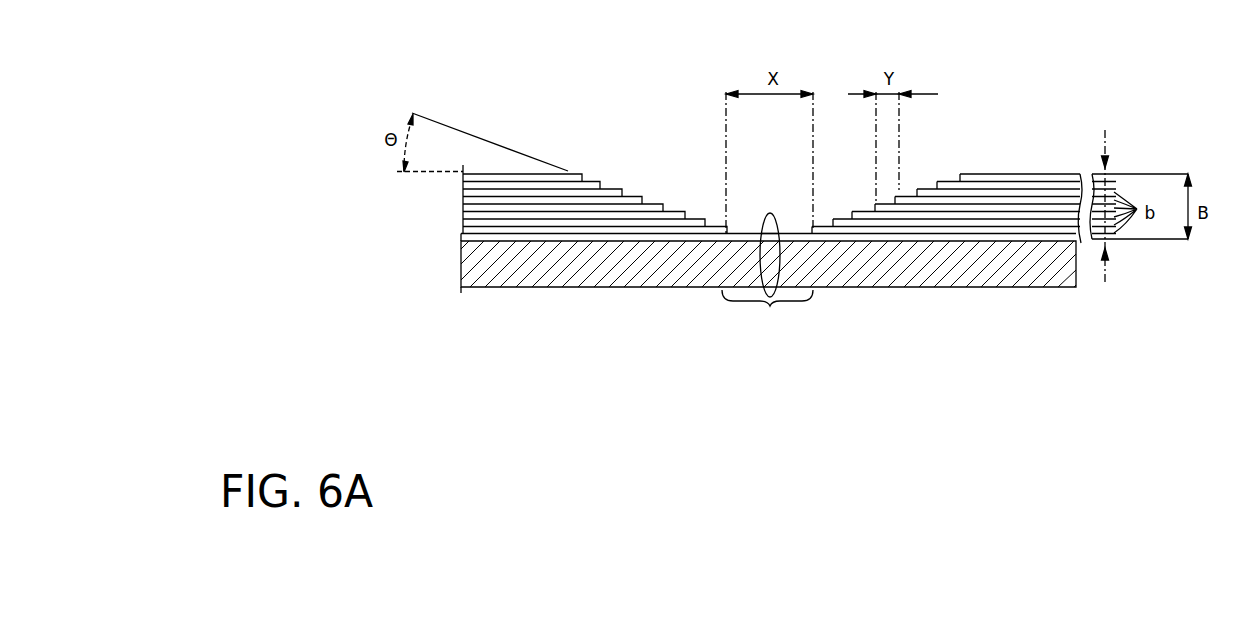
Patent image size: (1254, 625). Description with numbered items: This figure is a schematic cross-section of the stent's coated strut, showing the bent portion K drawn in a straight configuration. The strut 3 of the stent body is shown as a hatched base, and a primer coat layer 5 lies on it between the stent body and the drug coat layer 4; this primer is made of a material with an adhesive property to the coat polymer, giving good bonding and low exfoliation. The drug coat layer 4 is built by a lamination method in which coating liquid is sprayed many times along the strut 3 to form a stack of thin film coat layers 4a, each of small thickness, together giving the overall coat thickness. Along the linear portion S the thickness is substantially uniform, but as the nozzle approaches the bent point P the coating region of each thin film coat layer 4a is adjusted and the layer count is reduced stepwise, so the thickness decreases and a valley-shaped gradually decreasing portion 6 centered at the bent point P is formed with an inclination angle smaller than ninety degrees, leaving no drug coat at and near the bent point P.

The strut 3 is at (953, 284).
The drug coat layer 4 is at (854, 181).
The thin film coat layer 4a is at (1041, 194).
The primer coat layer 5 is at (762, 235).
The gradually decreasing portion 6 is at (854, 184).
The linear portion S is at (537, 293).
The bent portion K is at (767, 311).
The bent point P is at (777, 299).